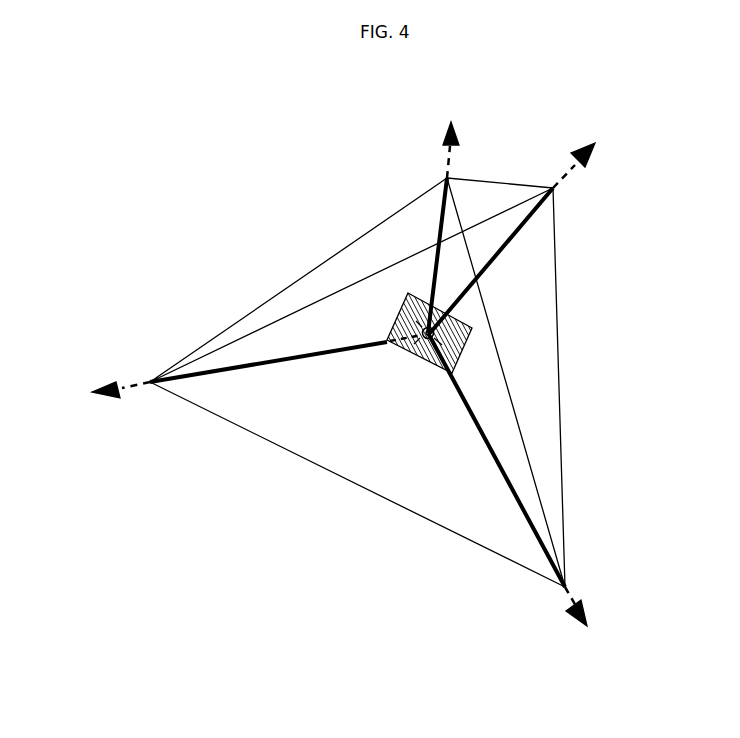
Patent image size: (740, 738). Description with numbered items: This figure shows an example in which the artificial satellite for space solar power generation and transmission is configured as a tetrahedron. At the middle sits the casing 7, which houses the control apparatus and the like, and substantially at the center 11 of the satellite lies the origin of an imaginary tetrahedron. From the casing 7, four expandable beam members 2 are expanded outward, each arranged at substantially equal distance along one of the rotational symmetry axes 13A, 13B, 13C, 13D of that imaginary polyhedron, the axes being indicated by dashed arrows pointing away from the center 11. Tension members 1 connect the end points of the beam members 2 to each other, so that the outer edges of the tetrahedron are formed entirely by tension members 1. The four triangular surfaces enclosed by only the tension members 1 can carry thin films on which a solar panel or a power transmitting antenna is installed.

The tension member 1 is at (475, 171).
The expandable beam member 2 is at (440, 183).
The casing 7 is at (400, 328).
The center 11 is at (424, 341).
The rotational symmetry axis 13A is at (453, 136).
The rotational symmetry axis 13B is at (586, 152).
The rotational symmetry axis 13C is at (97, 394).
The rotational symmetry axis 13D is at (585, 623).